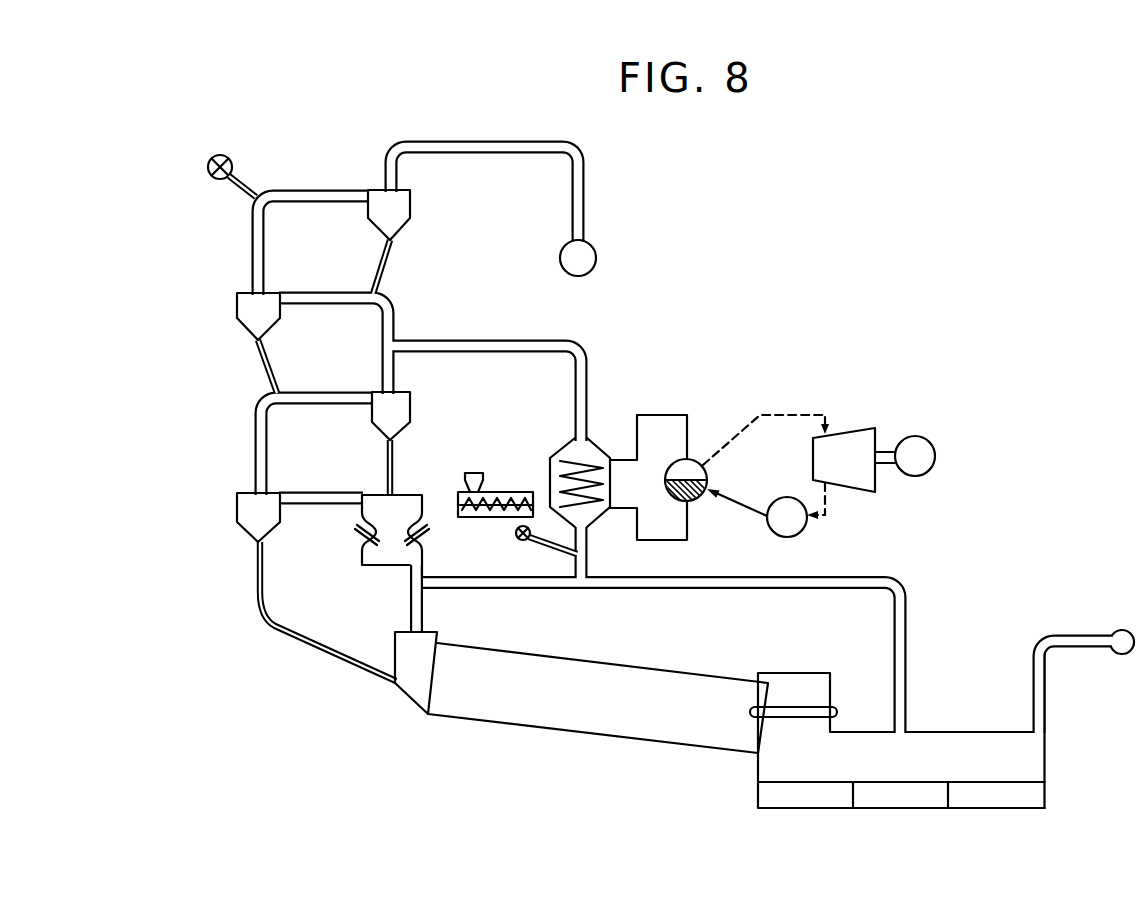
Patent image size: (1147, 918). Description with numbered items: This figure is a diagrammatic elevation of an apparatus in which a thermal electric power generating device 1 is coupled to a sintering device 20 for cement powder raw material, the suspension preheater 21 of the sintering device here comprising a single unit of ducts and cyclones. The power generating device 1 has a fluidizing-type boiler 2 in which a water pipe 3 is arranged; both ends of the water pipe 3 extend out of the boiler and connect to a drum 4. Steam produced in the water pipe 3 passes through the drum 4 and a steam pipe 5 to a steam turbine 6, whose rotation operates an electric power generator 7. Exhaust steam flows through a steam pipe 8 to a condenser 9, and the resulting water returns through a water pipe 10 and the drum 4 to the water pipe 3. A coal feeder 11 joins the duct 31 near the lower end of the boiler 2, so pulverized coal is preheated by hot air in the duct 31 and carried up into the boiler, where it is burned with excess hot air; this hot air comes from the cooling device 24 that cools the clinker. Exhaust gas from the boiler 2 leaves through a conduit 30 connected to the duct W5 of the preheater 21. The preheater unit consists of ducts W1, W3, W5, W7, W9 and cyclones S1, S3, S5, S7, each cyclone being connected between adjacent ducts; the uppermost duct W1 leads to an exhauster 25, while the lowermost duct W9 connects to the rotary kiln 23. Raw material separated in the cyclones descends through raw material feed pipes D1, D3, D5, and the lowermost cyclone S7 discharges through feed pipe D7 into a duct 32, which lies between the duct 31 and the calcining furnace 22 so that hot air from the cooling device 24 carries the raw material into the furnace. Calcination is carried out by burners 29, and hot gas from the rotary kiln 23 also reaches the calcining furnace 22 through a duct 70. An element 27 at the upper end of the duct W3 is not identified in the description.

The thermal electric power generating device 1 is at (763, 378).
The boiler 2 is at (558, 446).
The water pipe 3 is at (593, 455).
The drum 4 is at (705, 495).
The steam pipe 5 is at (738, 424).
The steam turbine 6 is at (872, 430).
The electric power generator 7 is at (923, 437).
The steam pipe 8 is at (830, 498).
The condenser 9 is at (782, 524).
The water pipe 10 is at (741, 503).
The coal feeder 11 is at (513, 492).
The sintering device 20 is at (384, 713).
The suspension preheater 21 is at (150, 384).
The calcining furnace 22 is at (420, 500).
The rotary kiln 23 is at (562, 728).
The cooling device 24 is at (903, 810).
The exhauster 25 is at (596, 258).
The valve 27 is at (229, 158).
The burner 29 is at (357, 537).
The conduit 30 is at (551, 341).
The duct 31 is at (586, 563).
The duct 32 is at (523, 588).
The duct 70 is at (424, 608).
The cyclone S1 is at (410, 210).
The cyclone S3 is at (237, 320).
The cyclone S5 is at (408, 406).
The cyclone S7 is at (237, 515).
The duct W1 is at (584, 165).
The duct W3 is at (310, 190).
The duct W5 is at (322, 293).
The duct W7 is at (325, 397).
The duct W9 is at (314, 492).
The raw material feed pipe D1 is at (389, 259).
The raw material feed pipe D3 is at (264, 372).
The raw material feed pipe D5 is at (393, 455).
The raw material feed pipe D7 is at (310, 648).